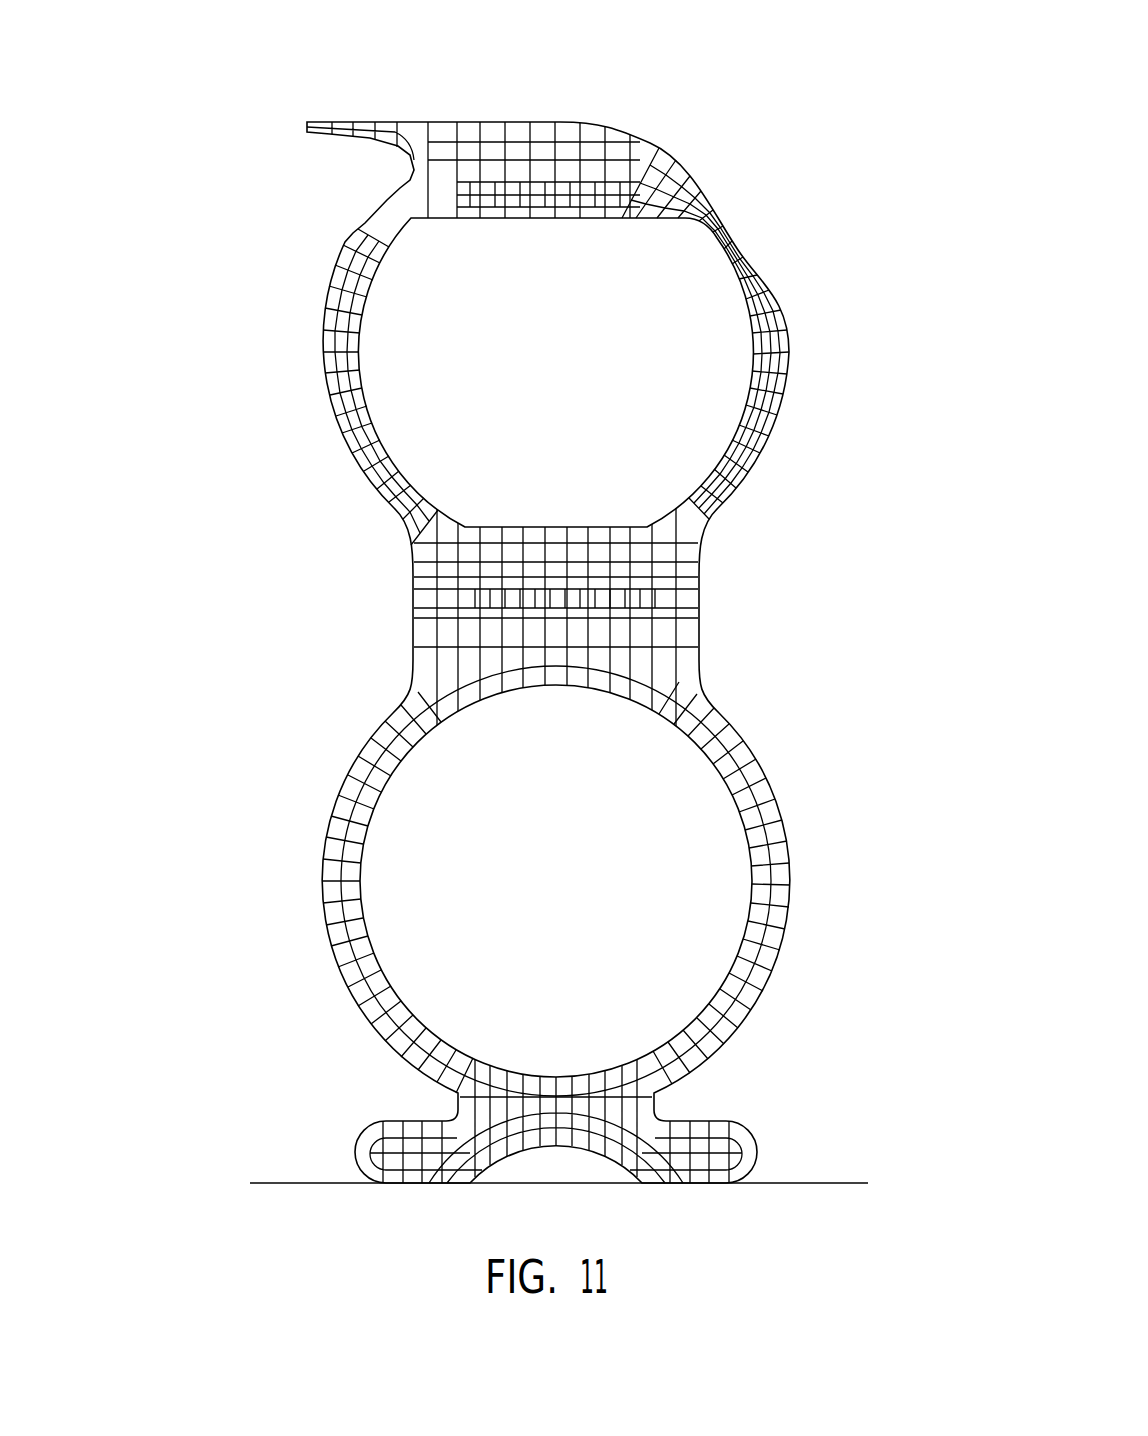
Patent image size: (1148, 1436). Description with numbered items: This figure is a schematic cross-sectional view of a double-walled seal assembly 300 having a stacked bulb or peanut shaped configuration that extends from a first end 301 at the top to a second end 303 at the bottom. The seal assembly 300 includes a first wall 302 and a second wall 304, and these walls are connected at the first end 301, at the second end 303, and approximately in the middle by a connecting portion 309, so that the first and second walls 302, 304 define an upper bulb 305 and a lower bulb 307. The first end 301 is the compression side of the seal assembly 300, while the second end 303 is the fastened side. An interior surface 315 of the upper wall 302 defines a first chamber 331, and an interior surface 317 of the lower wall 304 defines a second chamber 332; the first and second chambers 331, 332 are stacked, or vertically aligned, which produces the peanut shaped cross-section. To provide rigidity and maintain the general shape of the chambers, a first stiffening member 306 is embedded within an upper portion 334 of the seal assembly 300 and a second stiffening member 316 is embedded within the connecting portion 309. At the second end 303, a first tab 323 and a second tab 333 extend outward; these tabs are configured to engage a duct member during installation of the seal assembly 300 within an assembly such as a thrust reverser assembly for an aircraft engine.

The seal assembly 300 is at (183, 92).
The first end 301 is at (820, 148).
The first wall 302 is at (750, 483).
The second end 303 is at (776, 1113).
The second wall 304 is at (355, 978).
The upper bulb 305 is at (270, 320).
The first stiffening member 306 is at (615, 188).
The lower bulb 307 is at (300, 850).
The connecting portion 309 is at (370, 603).
The interior surface 315 is at (722, 340).
The second stiffening member 316 is at (632, 603).
The interior surface 317 is at (725, 807).
The first tab 323 is at (413, 1158).
The first chamber 331 is at (408, 282).
The second chamber 332 is at (410, 802).
The second tab 333 is at (677, 1160).
The upper portion 334 is at (493, 150).